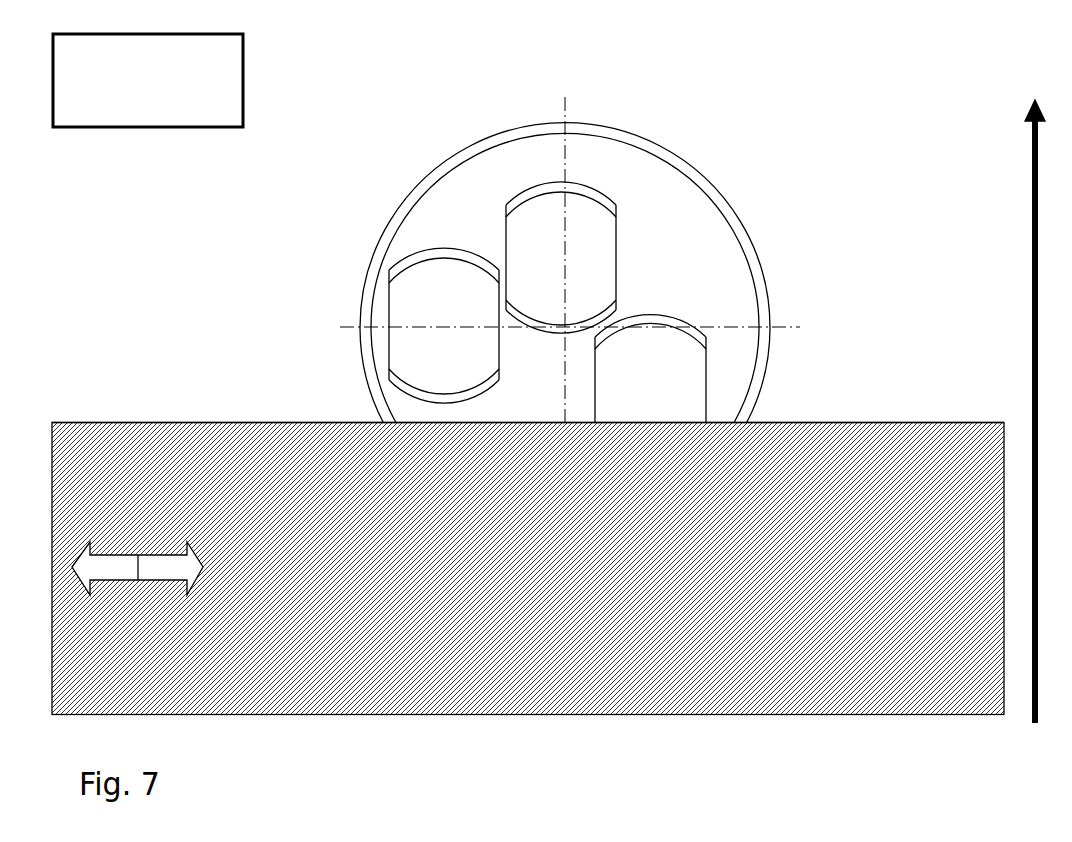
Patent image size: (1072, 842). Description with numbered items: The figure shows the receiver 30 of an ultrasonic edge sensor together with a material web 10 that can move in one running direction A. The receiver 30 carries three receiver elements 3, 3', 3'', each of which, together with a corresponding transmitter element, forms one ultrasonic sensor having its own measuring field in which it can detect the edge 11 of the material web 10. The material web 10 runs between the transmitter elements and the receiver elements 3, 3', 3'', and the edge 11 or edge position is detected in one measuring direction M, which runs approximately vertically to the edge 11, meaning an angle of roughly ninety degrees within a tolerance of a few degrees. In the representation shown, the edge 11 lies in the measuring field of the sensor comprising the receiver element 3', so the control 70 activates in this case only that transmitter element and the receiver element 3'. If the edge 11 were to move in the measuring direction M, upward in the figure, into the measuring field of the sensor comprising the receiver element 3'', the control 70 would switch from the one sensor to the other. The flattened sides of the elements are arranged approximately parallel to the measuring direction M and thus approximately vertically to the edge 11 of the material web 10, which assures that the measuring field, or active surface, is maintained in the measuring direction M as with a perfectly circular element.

The control 70 is at (220, 88).
The receiver 30 is at (398, 126).
The receiver element 3 is at (700, 315).
The receiver element 3' is at (587, 190).
The receiver element 3'' is at (384, 289).
The material web 10 is at (117, 477).
The edge 11 is at (202, 422).
The running direction A is at (137, 550).
The measuring direction M is at (1041, 440).